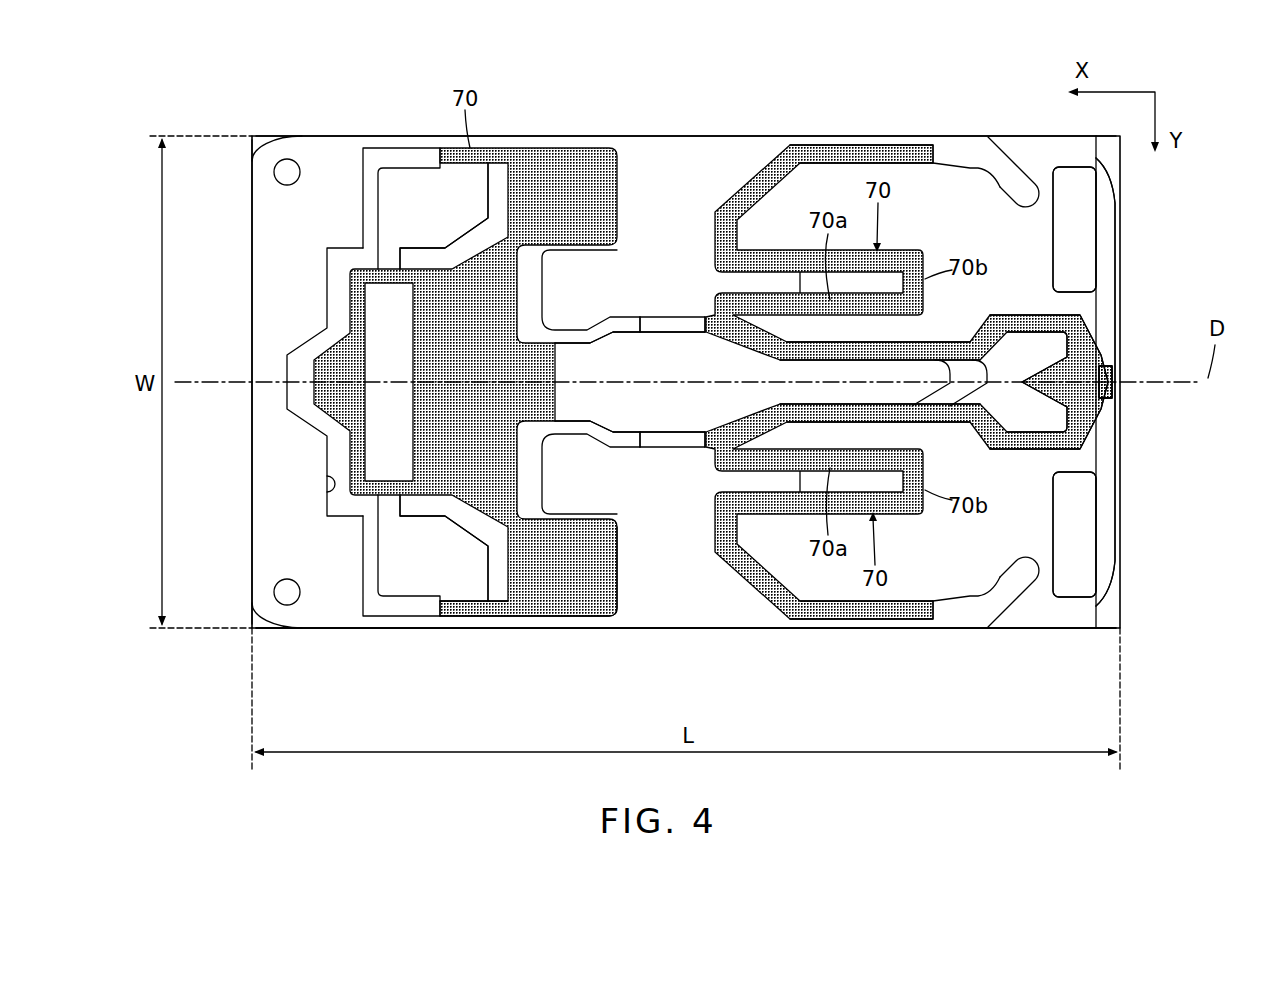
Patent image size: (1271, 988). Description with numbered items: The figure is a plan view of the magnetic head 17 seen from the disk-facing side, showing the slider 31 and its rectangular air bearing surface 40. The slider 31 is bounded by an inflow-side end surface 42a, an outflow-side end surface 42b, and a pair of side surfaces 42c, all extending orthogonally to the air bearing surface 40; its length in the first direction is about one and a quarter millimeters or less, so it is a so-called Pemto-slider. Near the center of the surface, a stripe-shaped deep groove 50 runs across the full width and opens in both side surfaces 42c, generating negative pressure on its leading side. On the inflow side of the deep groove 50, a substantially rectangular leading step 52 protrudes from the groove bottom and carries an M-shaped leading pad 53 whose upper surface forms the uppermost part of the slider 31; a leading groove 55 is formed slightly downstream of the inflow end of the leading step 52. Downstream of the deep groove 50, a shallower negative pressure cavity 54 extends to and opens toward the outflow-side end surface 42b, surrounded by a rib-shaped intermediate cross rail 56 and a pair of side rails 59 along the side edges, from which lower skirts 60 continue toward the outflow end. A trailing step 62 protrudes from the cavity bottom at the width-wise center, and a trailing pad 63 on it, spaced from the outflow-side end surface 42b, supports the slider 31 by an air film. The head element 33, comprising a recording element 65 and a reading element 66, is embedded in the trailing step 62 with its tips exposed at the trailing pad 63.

The magnetic head 17 is at (683, 106).
The slider 31 is at (1026, 632).
The head element 33 is at (1110, 366).
The air bearing surface 40 is at (573, 177).
The inflow-side end surface 42a is at (255, 283).
The outflow-side end surface 42b is at (1125, 490).
The side surfaces 42c is at (780, 134).
The deep groove 50 is at (655, 195).
The leading step 52 is at (343, 158).
The leading pad 53 is at (553, 598).
The negative pressure cavity 54 is at (930, 228).
The leading groove 55 is at (327, 498).
The intermediate cross rail 56 is at (775, 178).
The side rails 59 is at (877, 147).
The skirts 60 is at (1002, 189).
The trailing step 62 is at (1055, 424).
The trailing pad 63 is at (1082, 398).
The recording element 65 is at (1114, 386).
The reading element 66 is at (1170, 392).